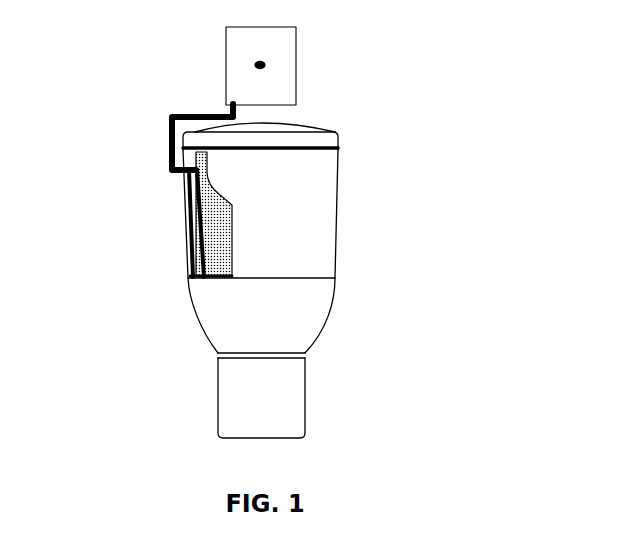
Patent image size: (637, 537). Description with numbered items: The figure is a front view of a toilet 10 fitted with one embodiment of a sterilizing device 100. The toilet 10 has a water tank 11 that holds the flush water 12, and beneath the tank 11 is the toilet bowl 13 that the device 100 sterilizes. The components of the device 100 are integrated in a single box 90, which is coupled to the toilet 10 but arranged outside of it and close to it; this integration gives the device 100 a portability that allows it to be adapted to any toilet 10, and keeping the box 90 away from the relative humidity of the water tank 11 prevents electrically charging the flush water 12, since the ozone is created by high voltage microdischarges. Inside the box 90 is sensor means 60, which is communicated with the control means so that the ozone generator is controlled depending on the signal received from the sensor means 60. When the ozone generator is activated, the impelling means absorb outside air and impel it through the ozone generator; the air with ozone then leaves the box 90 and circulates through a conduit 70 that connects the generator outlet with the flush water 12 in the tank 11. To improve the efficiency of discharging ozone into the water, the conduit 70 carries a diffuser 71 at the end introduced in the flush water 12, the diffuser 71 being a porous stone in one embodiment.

The toilet 10 is at (387, 193).
The sterilizing device 100 is at (195, 66).
The box 90 is at (296, 37).
The sensor means 60 is at (264, 67).
The water tank 11 is at (303, 247).
The toilet bowl 13 is at (287, 320).
The flush water 12 is at (188, 232).
The conduit 70 is at (167, 160).
The diffuser 71 is at (193, 280).